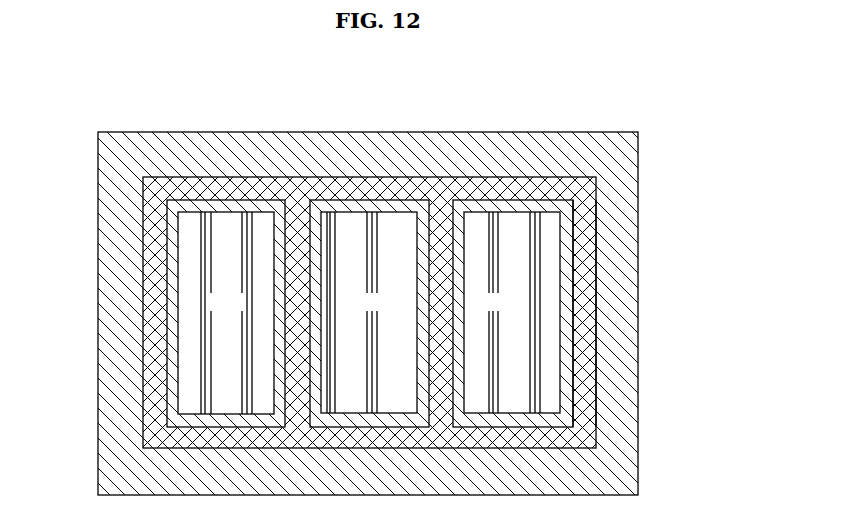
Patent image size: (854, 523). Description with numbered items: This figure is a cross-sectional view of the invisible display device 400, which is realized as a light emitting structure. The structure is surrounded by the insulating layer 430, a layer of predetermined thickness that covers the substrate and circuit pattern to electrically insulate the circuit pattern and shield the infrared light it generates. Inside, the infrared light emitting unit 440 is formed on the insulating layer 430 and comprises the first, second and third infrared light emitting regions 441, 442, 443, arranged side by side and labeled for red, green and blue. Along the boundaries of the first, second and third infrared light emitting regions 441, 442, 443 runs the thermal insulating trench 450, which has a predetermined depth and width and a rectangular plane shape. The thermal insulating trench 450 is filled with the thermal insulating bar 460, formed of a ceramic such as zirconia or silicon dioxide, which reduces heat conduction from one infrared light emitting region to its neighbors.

The invisible display device 400 is at (99, 132).
The insulating layer 430 is at (98, 216).
The infrared light emitting unit 440 is at (584, 331).
The first infrared light emitting region 441 is at (262, 206).
The second infrared light emitting region 442 is at (386, 204).
The third infrared light emitting region 443 is at (517, 204).
The thermal insulating trench 450 is at (170, 183).
The thermal insulating bar 460 is at (198, 190).